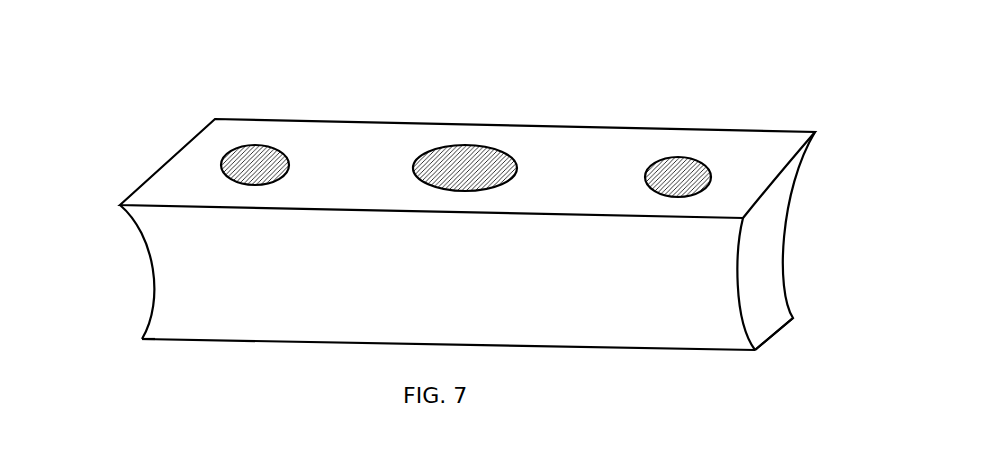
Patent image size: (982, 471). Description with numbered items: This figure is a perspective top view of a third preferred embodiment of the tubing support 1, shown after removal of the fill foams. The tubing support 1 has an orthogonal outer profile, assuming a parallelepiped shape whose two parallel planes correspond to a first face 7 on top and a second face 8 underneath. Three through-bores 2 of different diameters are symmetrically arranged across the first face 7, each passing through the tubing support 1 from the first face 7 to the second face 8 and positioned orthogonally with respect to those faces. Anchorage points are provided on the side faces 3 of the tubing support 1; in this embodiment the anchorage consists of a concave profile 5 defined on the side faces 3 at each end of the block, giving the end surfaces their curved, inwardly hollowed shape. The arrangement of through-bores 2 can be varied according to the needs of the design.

The tubing support 1 is at (622, 76).
The through-bore 2 is at (250, 162).
The side faces 3 is at (808, 212).
The concave profile 5 is at (140, 327).
The first face 7 is at (748, 142).
The second face 8 is at (290, 372).